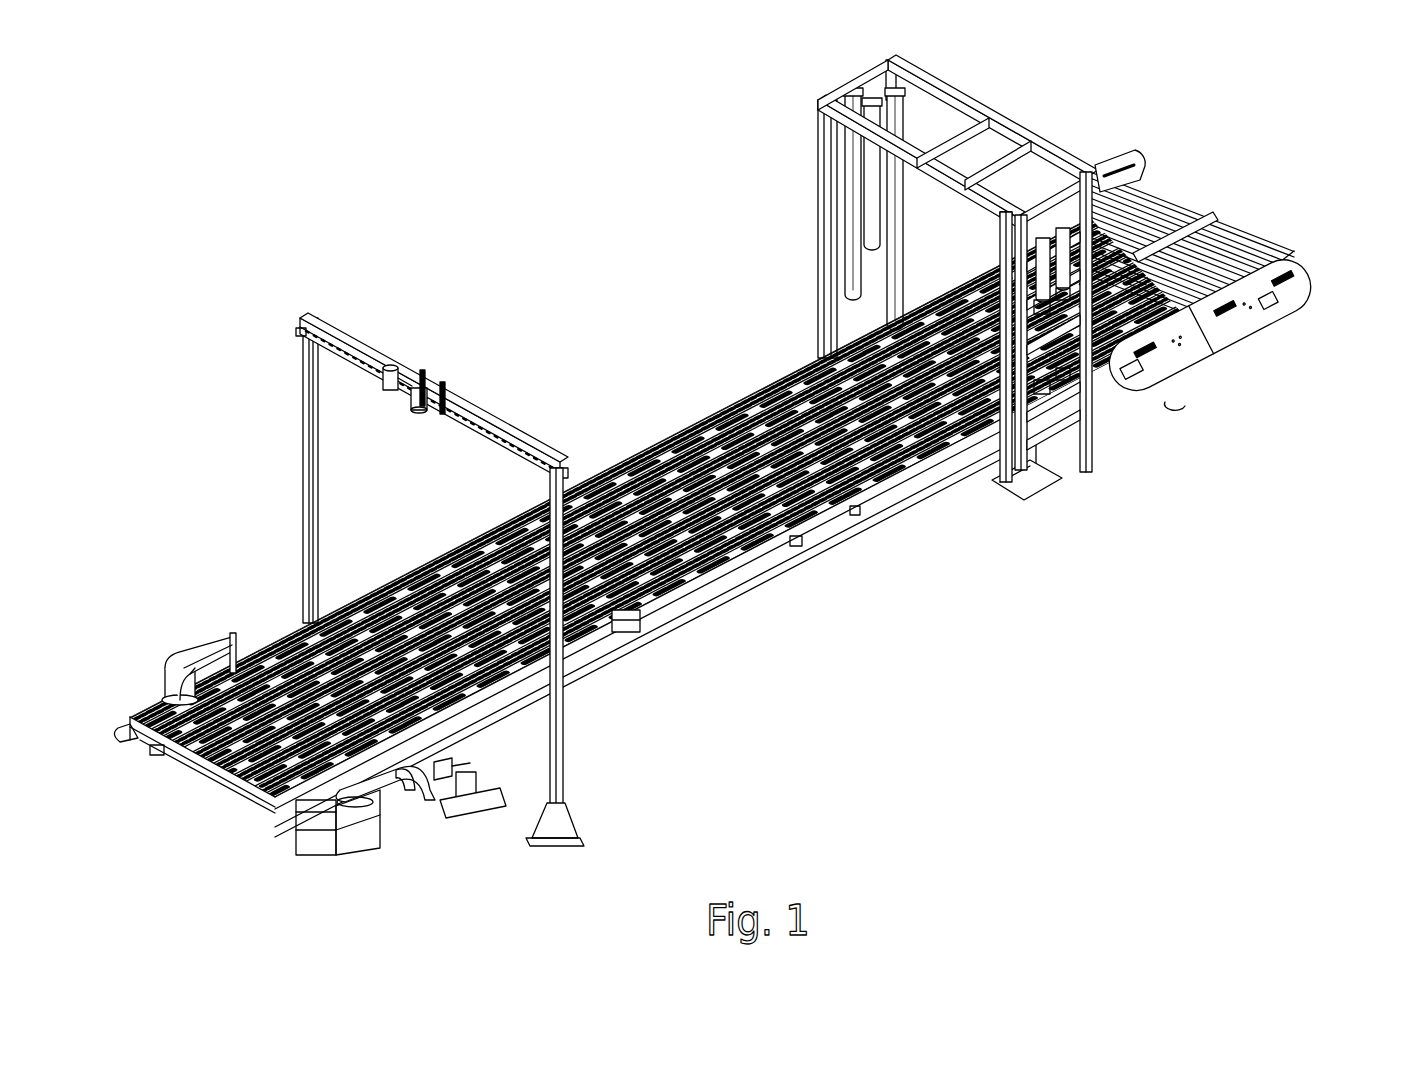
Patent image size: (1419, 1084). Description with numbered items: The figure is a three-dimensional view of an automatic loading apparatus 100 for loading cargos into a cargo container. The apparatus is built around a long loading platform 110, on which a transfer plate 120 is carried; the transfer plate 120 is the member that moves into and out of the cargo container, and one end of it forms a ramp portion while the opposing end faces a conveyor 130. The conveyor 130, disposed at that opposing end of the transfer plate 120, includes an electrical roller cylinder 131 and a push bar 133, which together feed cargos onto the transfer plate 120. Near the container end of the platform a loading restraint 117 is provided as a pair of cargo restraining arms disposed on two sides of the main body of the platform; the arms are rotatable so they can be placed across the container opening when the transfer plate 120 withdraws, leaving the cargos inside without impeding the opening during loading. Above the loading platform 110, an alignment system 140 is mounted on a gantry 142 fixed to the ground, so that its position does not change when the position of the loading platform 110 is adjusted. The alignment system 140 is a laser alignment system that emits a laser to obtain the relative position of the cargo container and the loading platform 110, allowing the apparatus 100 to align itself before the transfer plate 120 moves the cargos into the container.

The automatic loading apparatus 100 is at (748, 469).
The loading platform 110 is at (752, 588).
The loading restraint 117 is at (193, 665).
The transfer plate 120 is at (636, 612).
The conveyor 130 is at (1303, 273).
The electrical roller cylinder 131 is at (1174, 200).
The push bar 133 is at (1108, 164).
The alignment system 140 is at (395, 378).
The gantry 142 is at (317, 320).